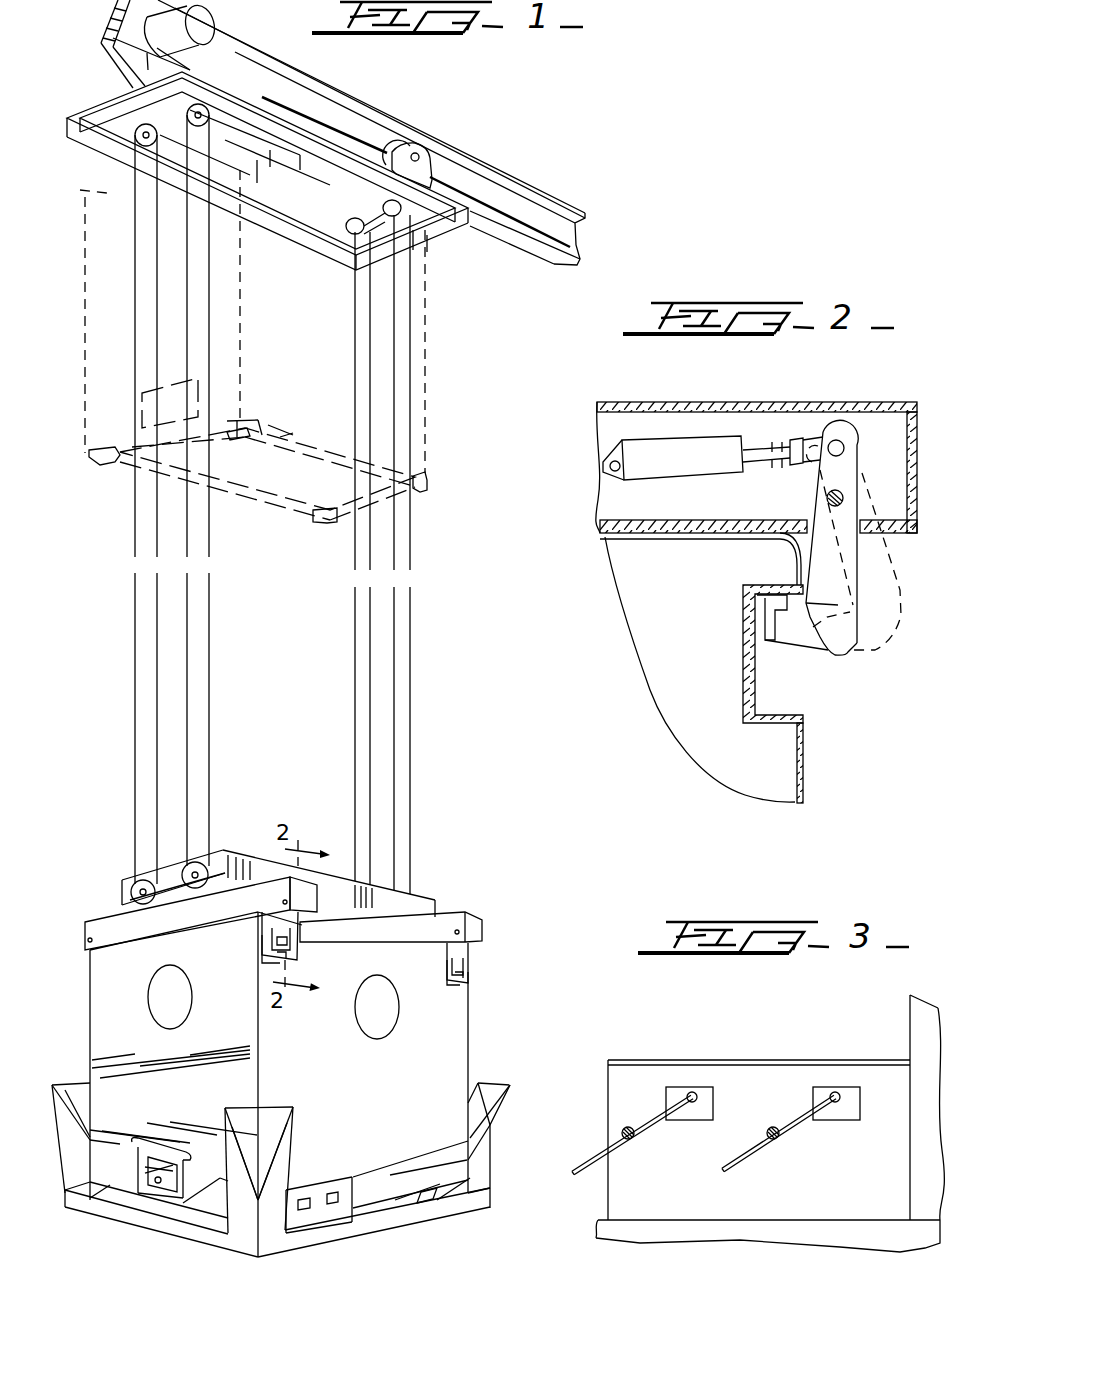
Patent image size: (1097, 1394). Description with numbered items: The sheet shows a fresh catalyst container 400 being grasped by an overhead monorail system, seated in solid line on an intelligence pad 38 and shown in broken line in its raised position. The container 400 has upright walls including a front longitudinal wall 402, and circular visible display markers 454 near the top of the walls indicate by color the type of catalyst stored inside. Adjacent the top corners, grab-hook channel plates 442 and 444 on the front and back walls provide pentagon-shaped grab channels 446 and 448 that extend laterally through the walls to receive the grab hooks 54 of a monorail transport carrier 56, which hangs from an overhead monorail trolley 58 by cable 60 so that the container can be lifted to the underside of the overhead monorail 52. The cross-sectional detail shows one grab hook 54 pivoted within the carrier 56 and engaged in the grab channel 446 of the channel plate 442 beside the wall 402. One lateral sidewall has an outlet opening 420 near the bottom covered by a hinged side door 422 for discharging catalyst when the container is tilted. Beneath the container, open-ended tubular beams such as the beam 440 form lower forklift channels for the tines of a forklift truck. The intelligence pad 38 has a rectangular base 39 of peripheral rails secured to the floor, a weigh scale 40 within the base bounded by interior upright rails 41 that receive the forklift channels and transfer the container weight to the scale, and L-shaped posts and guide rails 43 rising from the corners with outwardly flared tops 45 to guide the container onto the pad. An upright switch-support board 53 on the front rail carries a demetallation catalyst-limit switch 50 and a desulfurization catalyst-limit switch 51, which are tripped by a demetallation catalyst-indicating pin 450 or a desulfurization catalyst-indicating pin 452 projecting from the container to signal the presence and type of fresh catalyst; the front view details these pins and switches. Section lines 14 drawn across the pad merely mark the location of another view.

In FIG. 1, the pallet base section 14 is at (389, 1171).
In FIG. 1, the intelligence pad 38 is at (256, 1270).
In FIG. 3, the intelligence pad 38 is at (876, 1229).
In FIG. 1, the rectangular base 39 is at (400, 1230).
In FIG. 1, the weigh scale 40 is at (82, 1217).
In FIG. 1, the interior rectangular upright rails 41 is at (210, 1220).
In FIG. 3, the interior rectangular upright rails 41 is at (643, 1243).
In FIG. 1, the vertical L-shaped post and guide rail 43 is at (65, 1150).
In FIG. 1, the truncated, outwardly flared tops 45 is at (56, 1082).
In FIG. 1, the demetallation catalyst-limit switch 50 is at (302, 1210).
In FIG. 3, the demetallation catalyst-limit switch 50 is at (590, 1158).
In FIG. 1, the desulfurization catalyst-limit switch 51 is at (335, 1210).
In FIG. 3, the desulfurization catalyst-limit switch 51 is at (757, 1153).
In FIG. 1, the overhead monorail 52 is at (478, 157).
In FIG. 3, the upright limit switch-support board 53 is at (818, 1060).
In FIG. 1, the grab hooks 54 is at (300, 933).
In FIG. 2, the grab hooks 54 is at (843, 657).
In FIG. 1, the monorail transport carrier 56 is at (122, 880).
In FIG. 2, the monorail transport carrier 56 is at (760, 400).
In FIG. 1, the overhead monorail trolley 58 is at (93, 94).
In FIG. 1, the cable 60 is at (410, 780).
In FIG. 1, the fresh catalyst container 400 is at (80, 1004).
In FIG. 1, the front longitudinal wall 402 is at (468, 1022).
In FIG. 2, the front longitudinal wall 402 is at (803, 747).
In FIG. 1, the outlet opening and discharge port 420 is at (133, 1188).
In FIG. 1, the side door 422 is at (177, 1178).
In FIG. 1, the tubular beam 440 is at (422, 1198).
In FIG. 1, the grab-hook channel plate 442 is at (272, 940).
In FIG. 2, the grab-hook channel plate 442 is at (805, 693).
In FIG. 1, the grab-hook channel plate 444 is at (450, 967).
In FIG. 1, the grab channel 446 is at (283, 953).
In FIG. 2, the grab channel 446 is at (757, 657).
In FIG. 1, the grab channel 448 is at (470, 973).
In FIG. 3, the demetallation catalyst-indicating pin 450 is at (628, 1132).
In FIG. 3, the desulfurization catalyst-indicating pin 452 is at (777, 1130).
In FIG. 1, the circular visible display marker 454 is at (147, 993).